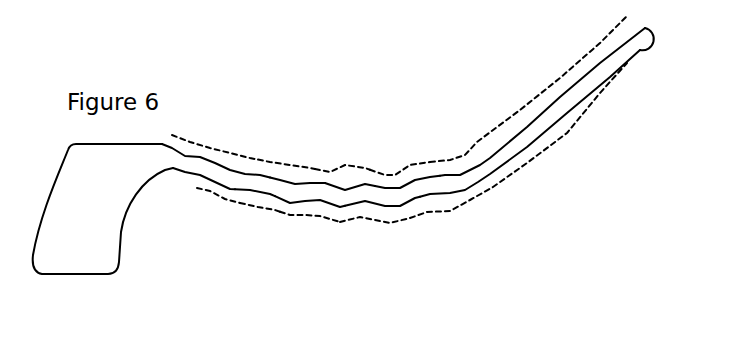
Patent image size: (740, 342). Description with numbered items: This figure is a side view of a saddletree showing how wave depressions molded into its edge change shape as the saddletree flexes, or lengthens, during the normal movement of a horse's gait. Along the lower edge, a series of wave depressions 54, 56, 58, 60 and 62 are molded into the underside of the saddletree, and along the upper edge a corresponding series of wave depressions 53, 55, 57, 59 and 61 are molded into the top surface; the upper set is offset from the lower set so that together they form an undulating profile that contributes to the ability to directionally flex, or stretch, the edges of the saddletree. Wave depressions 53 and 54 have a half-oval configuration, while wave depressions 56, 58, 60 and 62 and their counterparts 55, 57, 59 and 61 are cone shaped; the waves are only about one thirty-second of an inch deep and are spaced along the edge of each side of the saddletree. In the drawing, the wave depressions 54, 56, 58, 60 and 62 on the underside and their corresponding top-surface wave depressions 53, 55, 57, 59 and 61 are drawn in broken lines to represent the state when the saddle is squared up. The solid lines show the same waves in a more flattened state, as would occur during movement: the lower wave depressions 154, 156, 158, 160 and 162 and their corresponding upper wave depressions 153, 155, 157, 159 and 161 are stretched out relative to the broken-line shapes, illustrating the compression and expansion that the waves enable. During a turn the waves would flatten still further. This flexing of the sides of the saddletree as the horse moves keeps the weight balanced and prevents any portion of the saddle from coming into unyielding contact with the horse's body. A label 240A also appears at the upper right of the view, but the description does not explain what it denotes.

The applicator head 240A is at (598, 25).
The wave depression 53 is at (230, 152).
The wave depression 55 is at (286, 166).
The wave depression 57 is at (323, 170).
The wave depression 59 is at (393, 176).
The wave depression 61 is at (447, 158).
The wave depression 153 is at (238, 172).
The wave depression 155 is at (297, 183).
The wave depression 157 is at (347, 188).
The wave depression 159 is at (402, 186).
The wave depression 161 is at (463, 174).
The wave depression 54 is at (222, 197).
The wave depression 56 is at (253, 207).
The wave depression 58 is at (303, 215).
The wave depression 60 is at (365, 219).
The wave depression 62 is at (425, 212).
The lower wave depression 154 is at (217, 186).
The lower wave depression 156 is at (251, 190).
The lower wave depression 158 is at (311, 200).
The lower wave depression 160 is at (380, 206).
The lower wave depression 162 is at (440, 196).